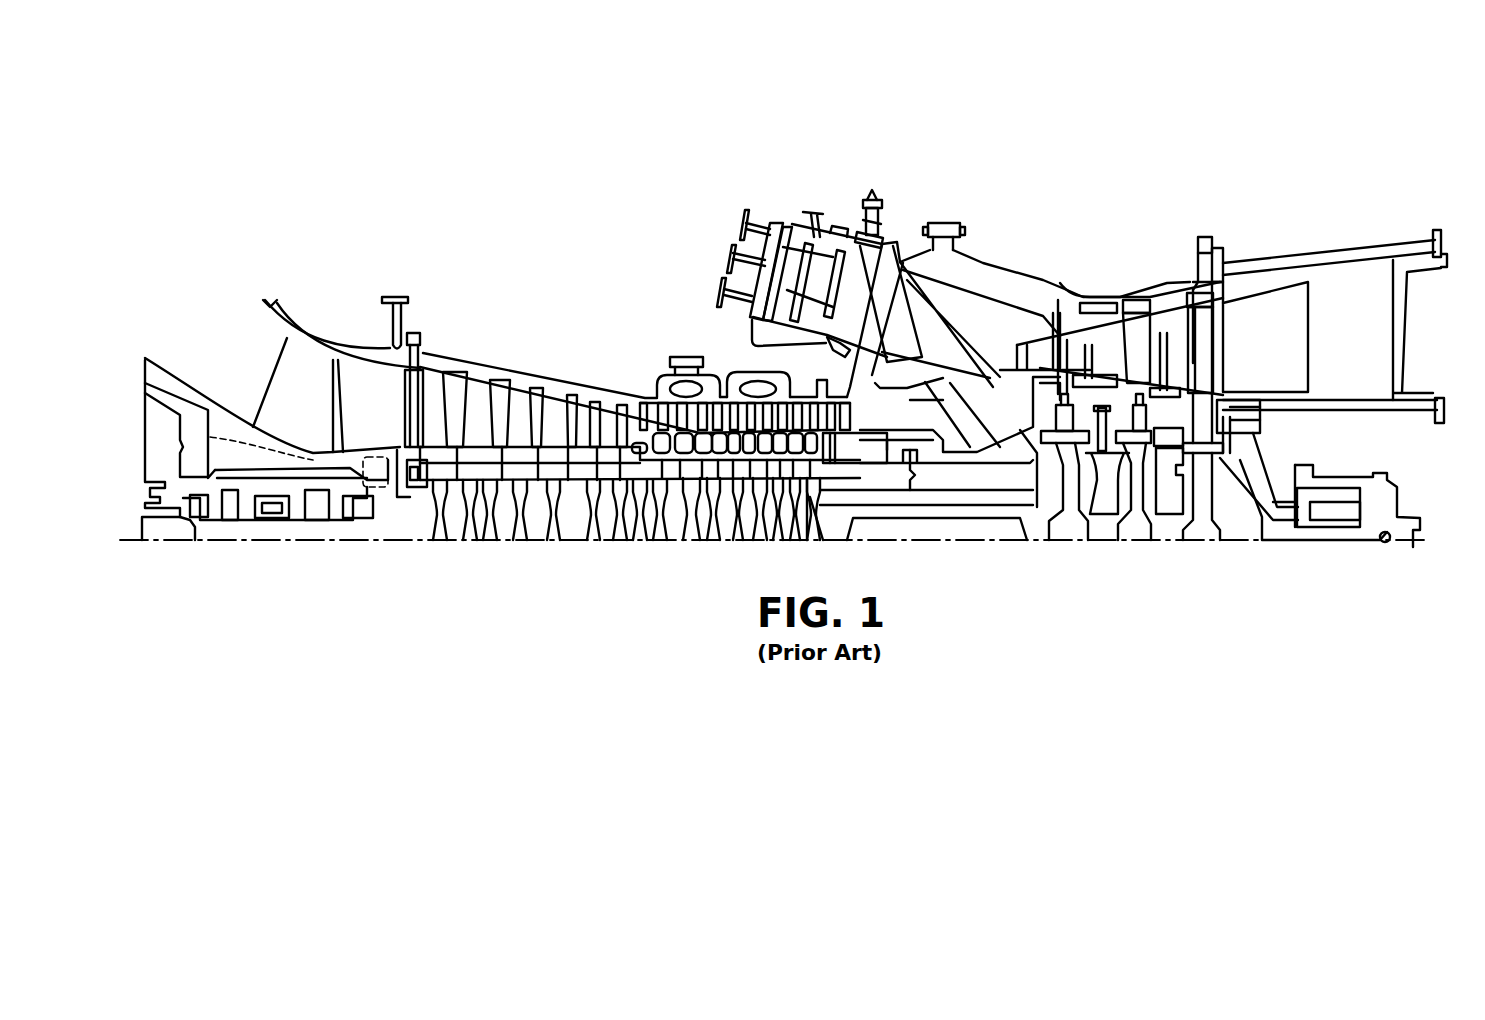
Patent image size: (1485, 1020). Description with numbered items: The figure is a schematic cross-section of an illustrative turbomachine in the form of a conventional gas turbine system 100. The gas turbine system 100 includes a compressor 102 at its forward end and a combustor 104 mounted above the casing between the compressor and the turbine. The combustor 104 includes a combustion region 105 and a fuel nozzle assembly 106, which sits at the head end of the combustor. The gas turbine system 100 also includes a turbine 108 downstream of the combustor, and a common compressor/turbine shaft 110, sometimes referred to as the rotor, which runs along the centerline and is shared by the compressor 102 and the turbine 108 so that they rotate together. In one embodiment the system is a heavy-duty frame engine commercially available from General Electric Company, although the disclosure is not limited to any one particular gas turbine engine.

The gas turbine system 100 is at (300, 160).
The compressor 102 is at (517, 374).
The combustor 104 is at (878, 174).
The combustion region 105 is at (862, 278).
The fuel nozzle assembly 106 is at (790, 224).
The turbine 108 is at (1187, 277).
The common compressor/turbine shaft 110 is at (432, 484).